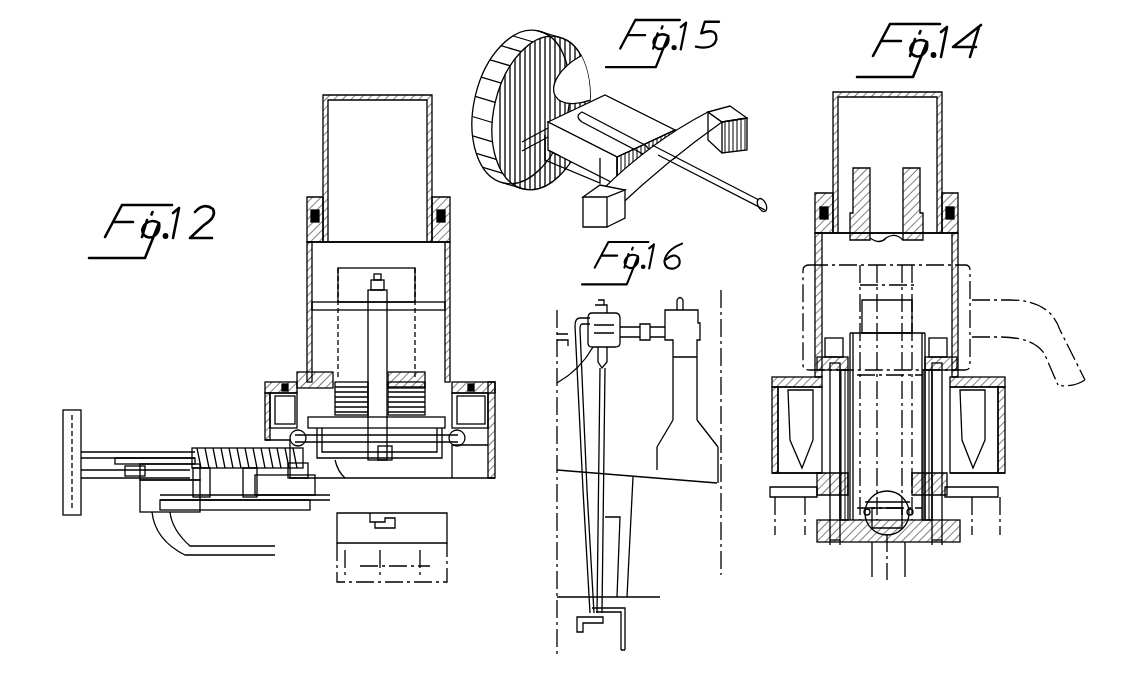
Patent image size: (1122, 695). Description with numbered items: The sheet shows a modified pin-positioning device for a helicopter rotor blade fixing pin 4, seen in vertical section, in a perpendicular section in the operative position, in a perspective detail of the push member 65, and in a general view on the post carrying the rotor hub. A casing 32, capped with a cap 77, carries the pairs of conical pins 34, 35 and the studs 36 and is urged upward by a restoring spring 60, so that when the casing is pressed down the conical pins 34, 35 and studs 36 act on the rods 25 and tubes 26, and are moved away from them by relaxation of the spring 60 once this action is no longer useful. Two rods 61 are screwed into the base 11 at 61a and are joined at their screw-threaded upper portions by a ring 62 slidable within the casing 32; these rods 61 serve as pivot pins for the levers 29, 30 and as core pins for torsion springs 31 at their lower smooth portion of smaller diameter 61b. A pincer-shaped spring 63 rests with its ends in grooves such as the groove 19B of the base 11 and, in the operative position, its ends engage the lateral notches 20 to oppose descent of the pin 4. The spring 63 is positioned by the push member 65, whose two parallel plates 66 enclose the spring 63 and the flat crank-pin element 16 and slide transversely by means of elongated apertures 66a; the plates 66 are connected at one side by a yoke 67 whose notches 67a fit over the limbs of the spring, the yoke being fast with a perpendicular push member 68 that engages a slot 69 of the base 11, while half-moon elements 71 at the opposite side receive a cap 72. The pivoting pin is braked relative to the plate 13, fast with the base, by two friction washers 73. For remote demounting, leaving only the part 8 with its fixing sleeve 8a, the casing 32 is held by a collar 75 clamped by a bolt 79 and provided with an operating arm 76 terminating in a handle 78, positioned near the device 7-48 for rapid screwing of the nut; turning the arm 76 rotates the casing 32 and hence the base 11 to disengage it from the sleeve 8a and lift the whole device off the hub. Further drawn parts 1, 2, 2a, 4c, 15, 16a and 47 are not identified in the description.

In FIG. 16, the container 1 is at (635, 330).
In FIG. 16, the supply pipe 2 is at (563, 345).
In FIG. 16, the supply pipe branch 2a is at (562, 370).
In FIG. 14, the pin 4 is at (908, 255).
In FIG. 14, the housing plug 4c is at (915, 190).
In FIG. 16, the device for rapid screwing of the nut 7 is at (607, 362).
In FIG. 12, the part 8 is at (432, 545).
In FIG. 12, the sleeve 8a is at (355, 528).
In FIG. 12, the base 11 is at (322, 424).
In FIG. 14, the base 11 is at (952, 542).
In FIG. 12, the plate 13 is at (272, 500).
In FIG. 12, the tube 15 is at (195, 562).
In FIG. 12, the flat crank-pin element 16 is at (190, 450).
In FIG. 12, the slide block guide 16a is at (228, 490).
In FIG. 12, the groove 19B is at (305, 500).
In FIG. 14, the lateral notches 20 is at (905, 540).
In FIG. 12, the rods 25 is at (292, 437).
In FIG. 12, the tubes 26 is at (290, 420).
In FIG. 12, the lever 29 is at (360, 452).
In FIG. 14, the lever 29 is at (980, 468).
In FIG. 12, the lever 30 is at (405, 455).
In FIG. 14, the lever 30 is at (825, 508).
In FIG. 12, the torsion springs 31 is at (445, 470).
In FIG. 12, the casing 32 is at (307, 270).
In FIG. 16, the casing 32 is at (606, 316).
In FIG. 14, the conical pins 34 is at (802, 420).
In FIG. 14, the conical pins 35 is at (975, 420).
In FIG. 12, the studs 36 is at (285, 405).
In FIG. 16, the hook 47 is at (618, 605).
In FIG. 16, the device for rapid screwing of the nut 48 is at (604, 445).
In FIG. 12, the restoring spring 60 is at (355, 398).
In FIG. 14, the restoring spring 60 is at (812, 392).
In FIG. 12, the rods 61 is at (378, 340).
In FIG. 14, the rods 61 is at (838, 455).
In FIG. 12, the screwed portion of rods 61a is at (380, 433).
In FIG. 14, the lower smooth portion of smaller diameter 61b is at (855, 542).
In FIG. 12, the ring 62 is at (320, 304).
In FIG. 12, the spring 63 is at (133, 462).
In FIG. 14, the spring 63 is at (868, 500).
In FIG. 15, the push member 65 is at (641, 103).
In FIG. 12, the parallel plates 66 is at (95, 452).
In FIG. 15, the parallel plates 66 is at (650, 126).
In FIG. 15, the elongated apertures 66a is at (655, 188).
In FIG. 15, the yoke 67 is at (715, 112).
In FIG. 15, the notches 67a is at (742, 148).
In FIG. 15, the perpendicular push member 68 is at (745, 207).
In FIG. 15, the slot 69 is at (548, 185).
In FIG. 15, the half-moon elements 71 is at (565, 50).
In FIG. 12, the cap 72 is at (72, 410).
In FIG. 15, the cap 72 is at (503, 62).
In FIG. 12, the friction washers 73 is at (143, 476).
In FIG. 16, the collar 75 is at (628, 335).
In FIG. 14, the collar 75 is at (970, 272).
In FIG. 16, the operating arm 76 is at (575, 318).
In FIG. 14, the operating arm 76 is at (1040, 308).
In FIG. 12, the cap 77 is at (323, 150).
In FIG. 14, the cap 77 is at (942, 118).
In FIG. 16, the handle 78 is at (585, 632).
In FIG. 14, the bolt 79 is at (858, 300).